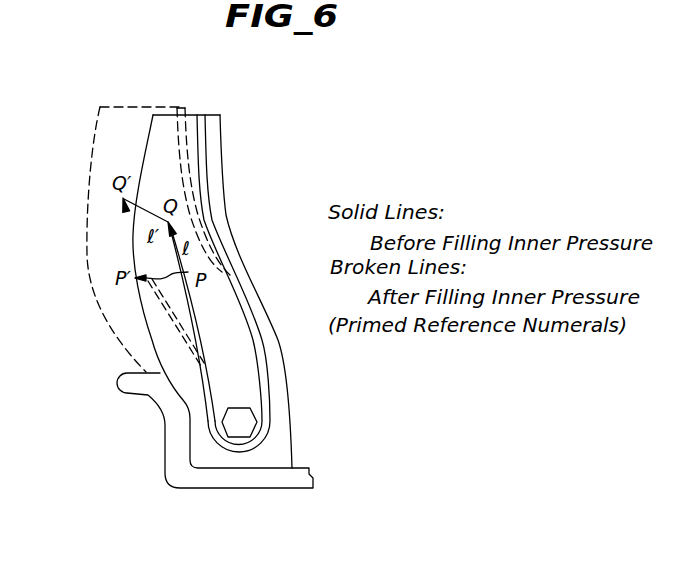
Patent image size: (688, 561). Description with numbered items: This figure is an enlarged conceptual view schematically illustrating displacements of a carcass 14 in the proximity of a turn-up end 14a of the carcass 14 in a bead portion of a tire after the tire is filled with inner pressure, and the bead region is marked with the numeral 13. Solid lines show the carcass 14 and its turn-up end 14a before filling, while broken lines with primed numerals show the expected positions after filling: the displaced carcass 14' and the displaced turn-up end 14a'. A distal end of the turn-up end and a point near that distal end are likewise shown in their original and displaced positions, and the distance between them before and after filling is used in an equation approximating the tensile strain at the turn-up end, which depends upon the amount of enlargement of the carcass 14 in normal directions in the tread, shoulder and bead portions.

The hose body 13 is at (240, 203).
The carcass 14 is at (250, 283).
The displaced position of the carcass 14' is at (207, 174).
The turn-up end of the carcass 14a is at (230, 324).
The displaced position of the turn-up end 14a' is at (132, 322).